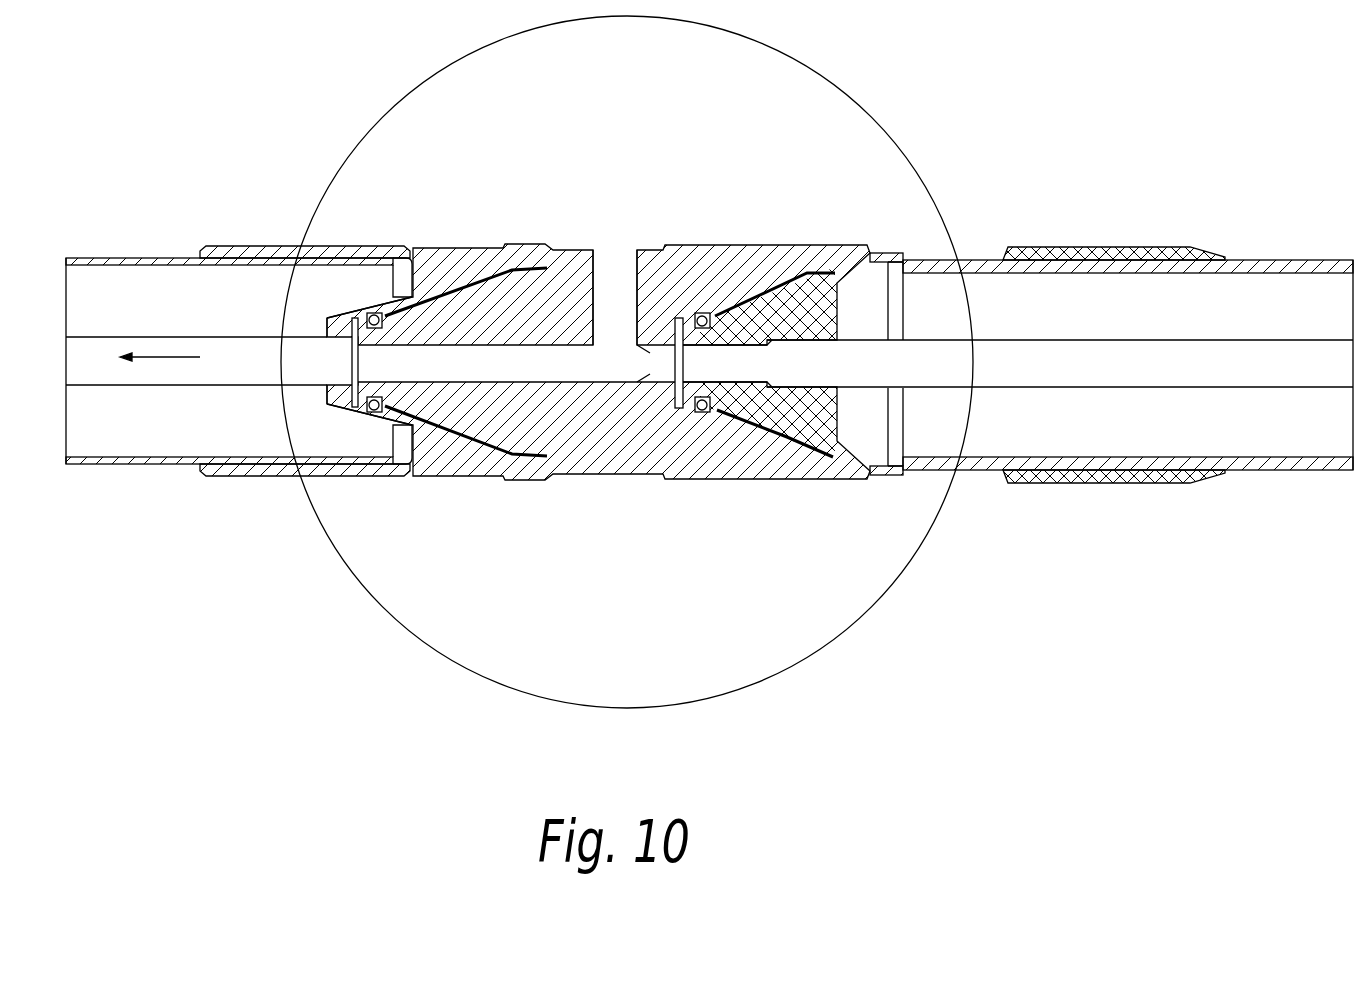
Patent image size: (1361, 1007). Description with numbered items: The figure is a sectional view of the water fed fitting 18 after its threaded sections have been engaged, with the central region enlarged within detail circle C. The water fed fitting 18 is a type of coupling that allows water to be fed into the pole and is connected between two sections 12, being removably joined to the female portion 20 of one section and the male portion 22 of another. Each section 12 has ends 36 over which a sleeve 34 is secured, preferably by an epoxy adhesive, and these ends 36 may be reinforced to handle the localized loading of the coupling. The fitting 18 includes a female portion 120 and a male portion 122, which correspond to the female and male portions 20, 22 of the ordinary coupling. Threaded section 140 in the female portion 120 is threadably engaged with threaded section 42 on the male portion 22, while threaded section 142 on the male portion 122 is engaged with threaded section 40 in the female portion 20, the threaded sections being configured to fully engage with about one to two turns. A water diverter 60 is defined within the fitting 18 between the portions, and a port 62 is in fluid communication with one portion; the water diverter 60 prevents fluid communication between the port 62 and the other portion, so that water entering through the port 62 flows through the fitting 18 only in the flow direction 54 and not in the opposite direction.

The section 12 is at (83, 258).
The water fed fitting 18 is at (650, 128).
The female portion 20 is at (253, 246).
The male portion 22 is at (1112, 247).
The sleeve 34 is at (238, 478).
The end 36 is at (233, 457).
The threaded section 40 is at (452, 286).
The threaded section 42 is at (767, 437).
The flow direction 54 is at (166, 356).
The water diverter 60 is at (656, 392).
The port 62 is at (644, 250).
The female portion 120 is at (767, 244).
The male portion 122 is at (555, 250).
The threaded section 140 is at (775, 365).
The threaded section 142 is at (466, 362).
The detail circle C is at (354, 575).